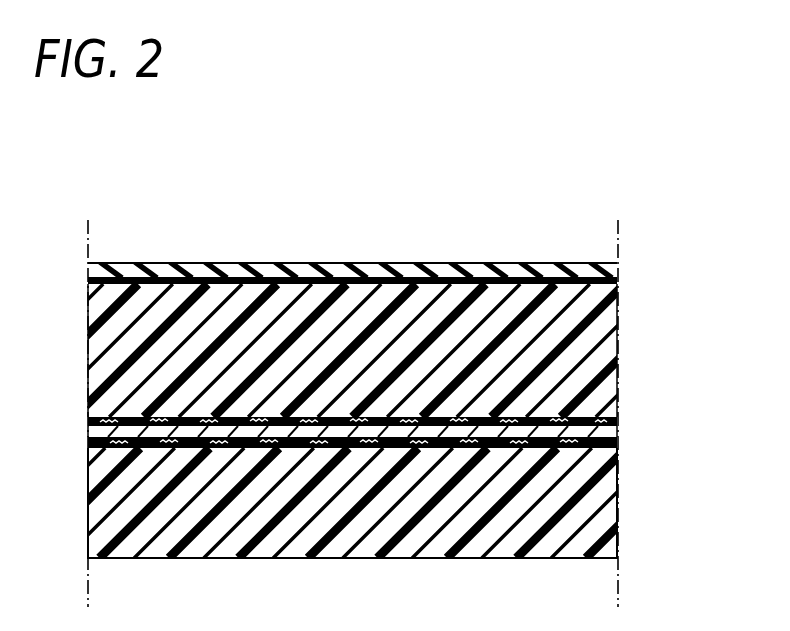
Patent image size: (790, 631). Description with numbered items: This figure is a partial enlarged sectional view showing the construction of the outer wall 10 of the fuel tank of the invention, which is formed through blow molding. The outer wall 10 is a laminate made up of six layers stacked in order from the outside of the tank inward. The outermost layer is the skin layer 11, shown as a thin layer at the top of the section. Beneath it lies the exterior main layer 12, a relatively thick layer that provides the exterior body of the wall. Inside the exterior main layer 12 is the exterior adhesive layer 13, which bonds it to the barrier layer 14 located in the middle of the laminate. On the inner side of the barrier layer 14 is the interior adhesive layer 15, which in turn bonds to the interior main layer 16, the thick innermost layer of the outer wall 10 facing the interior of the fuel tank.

The outer wall 10 is at (190, 238).
The skin layer 11 is at (618, 267).
The exterior main layer 12 is at (600, 328).
The exterior adhesive layer 13 is at (613, 412).
The barrier layer 14 is at (608, 430).
The interior adhesive layer 15 is at (618, 462).
The interior main layer 16 is at (603, 522).